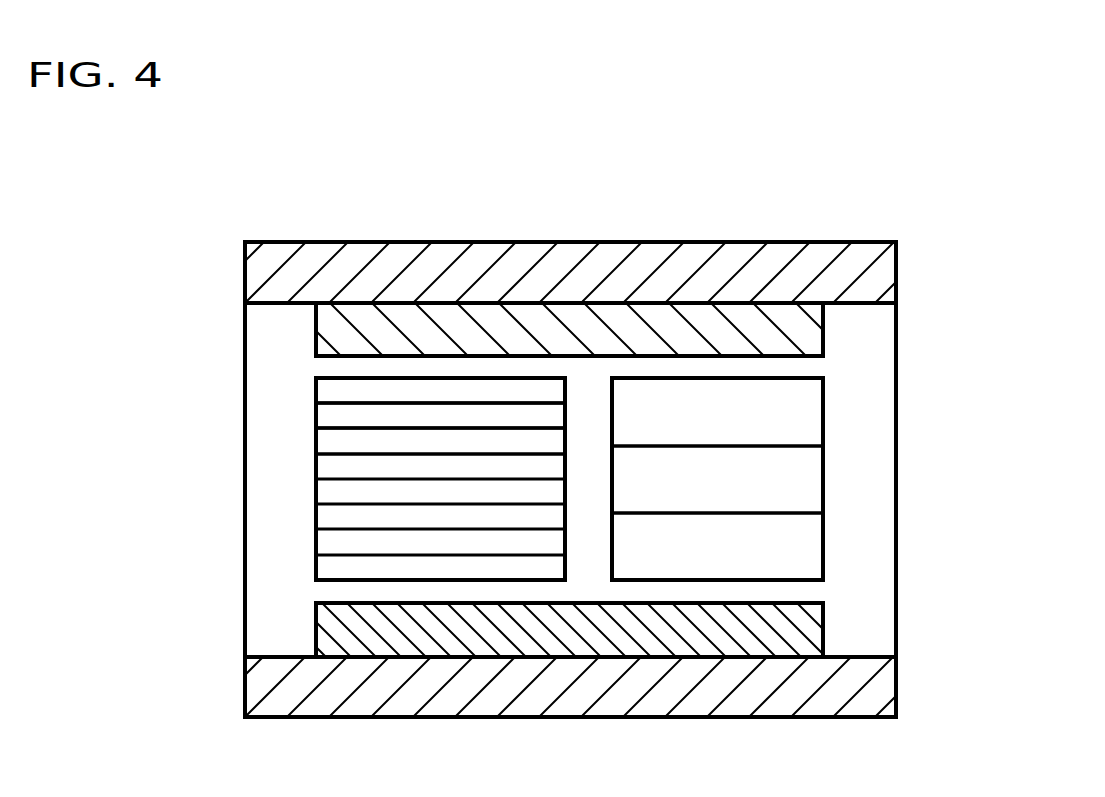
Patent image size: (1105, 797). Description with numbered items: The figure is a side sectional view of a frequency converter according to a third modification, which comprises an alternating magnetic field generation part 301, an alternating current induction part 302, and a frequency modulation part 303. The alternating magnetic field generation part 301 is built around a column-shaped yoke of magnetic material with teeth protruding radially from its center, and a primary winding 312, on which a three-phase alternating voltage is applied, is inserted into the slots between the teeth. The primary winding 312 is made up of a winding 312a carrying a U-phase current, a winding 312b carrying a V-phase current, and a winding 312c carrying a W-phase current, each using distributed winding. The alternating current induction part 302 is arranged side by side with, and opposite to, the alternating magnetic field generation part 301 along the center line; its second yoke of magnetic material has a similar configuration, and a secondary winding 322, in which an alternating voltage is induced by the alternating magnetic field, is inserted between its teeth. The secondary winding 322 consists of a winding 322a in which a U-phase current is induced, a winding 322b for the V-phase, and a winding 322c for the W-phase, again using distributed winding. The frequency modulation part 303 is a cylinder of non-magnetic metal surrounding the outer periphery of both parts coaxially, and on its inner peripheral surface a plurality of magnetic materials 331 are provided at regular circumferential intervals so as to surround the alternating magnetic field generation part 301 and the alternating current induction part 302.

The alternating magnetic field generation part 301 is at (311, 465).
The alternating current induction part 302 is at (844, 458).
The frequency modulation part 303 is at (362, 239).
The primary winding 312 is at (311, 480).
The winding 312a is at (325, 393).
The winding 312b is at (325, 415).
The winding 312c is at (325, 440).
The secondary winding 322 is at (844, 479).
The winding 322a is at (813, 412).
The winding 322b is at (812, 482).
The winding 322c is at (812, 548).
The magnetic materials 331 is at (748, 322).